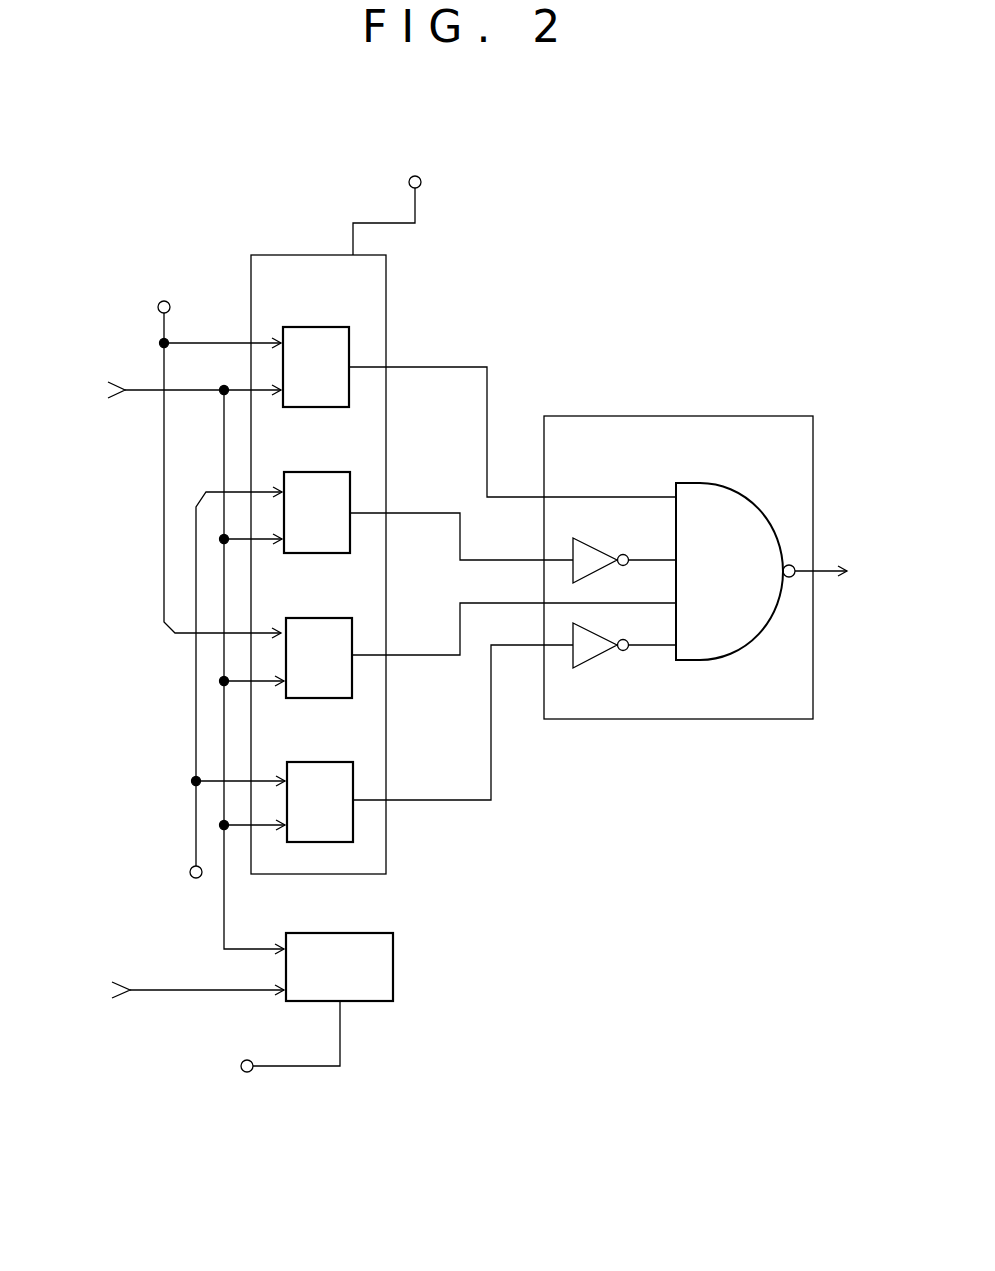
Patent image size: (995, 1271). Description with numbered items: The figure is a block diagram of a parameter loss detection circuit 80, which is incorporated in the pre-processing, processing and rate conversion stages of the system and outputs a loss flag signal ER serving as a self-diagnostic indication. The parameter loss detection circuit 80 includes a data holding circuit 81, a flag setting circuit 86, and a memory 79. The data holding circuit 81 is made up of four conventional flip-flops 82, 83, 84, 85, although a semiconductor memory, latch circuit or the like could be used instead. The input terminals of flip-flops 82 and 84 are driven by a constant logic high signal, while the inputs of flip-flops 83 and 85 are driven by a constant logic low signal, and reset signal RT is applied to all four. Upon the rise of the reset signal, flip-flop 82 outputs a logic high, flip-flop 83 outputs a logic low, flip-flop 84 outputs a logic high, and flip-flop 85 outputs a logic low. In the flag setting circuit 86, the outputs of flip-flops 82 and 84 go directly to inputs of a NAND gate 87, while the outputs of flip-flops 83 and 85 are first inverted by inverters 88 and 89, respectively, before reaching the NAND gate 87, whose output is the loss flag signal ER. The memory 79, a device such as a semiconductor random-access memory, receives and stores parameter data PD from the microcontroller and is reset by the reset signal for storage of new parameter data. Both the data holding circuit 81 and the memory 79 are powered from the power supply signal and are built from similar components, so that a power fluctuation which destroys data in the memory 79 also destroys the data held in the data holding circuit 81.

The memory 79 is at (362, 933).
The parameter loss detection circuit 80 is at (556, 254).
The data holding circuit 81 is at (276, 255).
The flip-flop 82 is at (313, 327).
The flip-flop 83 is at (312, 472).
The flip-flop 84 is at (313, 618).
The flip-flop 85 is at (315, 762).
The flag setting circuit 86 is at (595, 416).
The NAND gate 87 is at (730, 486).
The inverter 88 is at (620, 533).
The inverter 89 is at (597, 657).